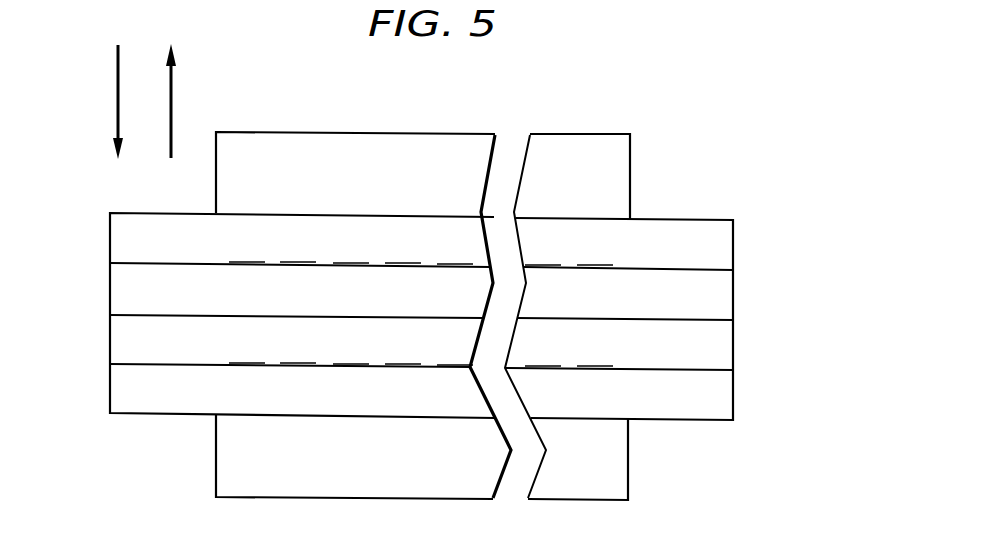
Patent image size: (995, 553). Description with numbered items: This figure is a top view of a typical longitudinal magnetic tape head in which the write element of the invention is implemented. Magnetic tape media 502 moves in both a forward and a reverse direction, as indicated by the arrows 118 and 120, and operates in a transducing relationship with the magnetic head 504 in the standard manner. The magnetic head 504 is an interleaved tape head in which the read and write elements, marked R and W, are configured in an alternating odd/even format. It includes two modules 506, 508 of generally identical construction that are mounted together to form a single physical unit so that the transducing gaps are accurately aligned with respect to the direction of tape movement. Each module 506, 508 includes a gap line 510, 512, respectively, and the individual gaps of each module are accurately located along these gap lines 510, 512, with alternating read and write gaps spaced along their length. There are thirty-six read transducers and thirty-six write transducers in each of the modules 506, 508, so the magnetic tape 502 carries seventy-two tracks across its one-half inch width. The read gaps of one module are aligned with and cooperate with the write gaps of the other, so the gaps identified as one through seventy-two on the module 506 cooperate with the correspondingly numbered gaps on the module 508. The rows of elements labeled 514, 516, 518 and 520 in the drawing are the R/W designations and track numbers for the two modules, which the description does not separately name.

The arrow 118 is at (118, 93).
The arrow 120 is at (171, 105).
The magnetic tape media 502 is at (630, 155).
The magnetic head 504 is at (712, 192).
The module 506 is at (818, 220).
The module 508 is at (818, 322).
The gap line 510 is at (130, 265).
The gap line 512 is at (130, 366).
The first write/read element row 514 is at (737, 248).
The first track number row 516 is at (737, 300).
The second write/read element row 518 is at (737, 342).
The second track number row 520 is at (737, 385).